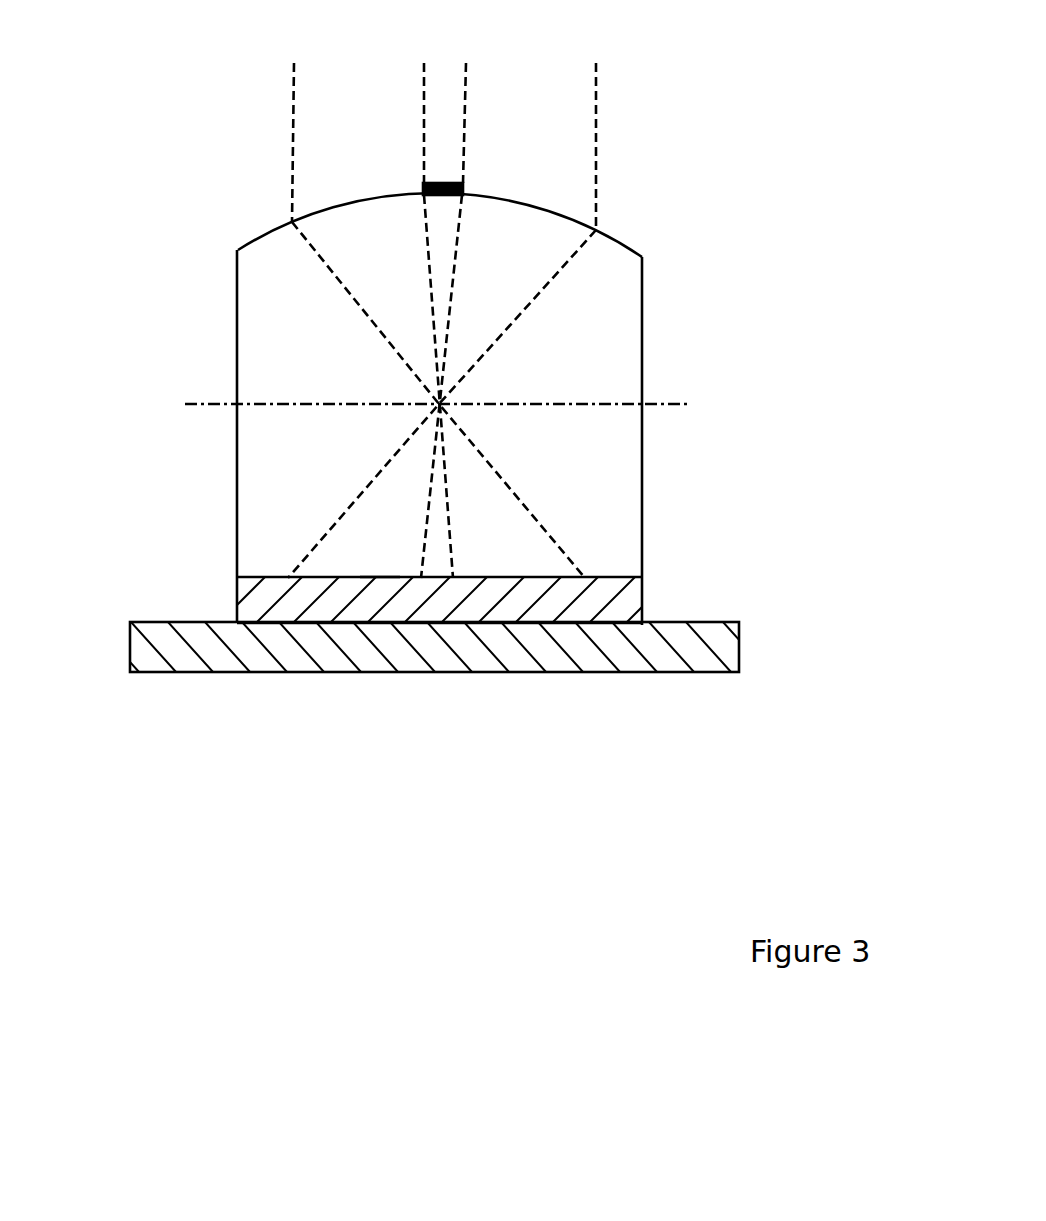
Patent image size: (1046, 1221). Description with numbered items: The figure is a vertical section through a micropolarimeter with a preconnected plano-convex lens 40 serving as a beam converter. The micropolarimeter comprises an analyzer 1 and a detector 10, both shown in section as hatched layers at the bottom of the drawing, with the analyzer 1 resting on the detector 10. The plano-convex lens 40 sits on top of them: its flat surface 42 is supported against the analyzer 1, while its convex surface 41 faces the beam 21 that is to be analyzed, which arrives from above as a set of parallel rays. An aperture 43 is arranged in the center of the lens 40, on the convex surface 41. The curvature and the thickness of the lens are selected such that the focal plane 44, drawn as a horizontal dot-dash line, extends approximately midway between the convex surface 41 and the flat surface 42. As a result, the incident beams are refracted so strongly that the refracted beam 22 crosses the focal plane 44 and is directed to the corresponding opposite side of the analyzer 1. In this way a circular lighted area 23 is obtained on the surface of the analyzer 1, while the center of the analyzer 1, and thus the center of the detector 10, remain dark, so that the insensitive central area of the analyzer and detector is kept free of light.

The analyzer 1 is at (648, 598).
The detector 10 is at (748, 652).
The beam 21 is at (545, 100).
The beam 22 is at (395, 328).
The lighted area 23 is at (378, 580).
The plano-convex lens 40 is at (612, 335).
The convex surface 41 is at (320, 212).
The flat surface 42 is at (267, 572).
The aperture 43 is at (450, 182).
The focal plane 44 is at (668, 404).